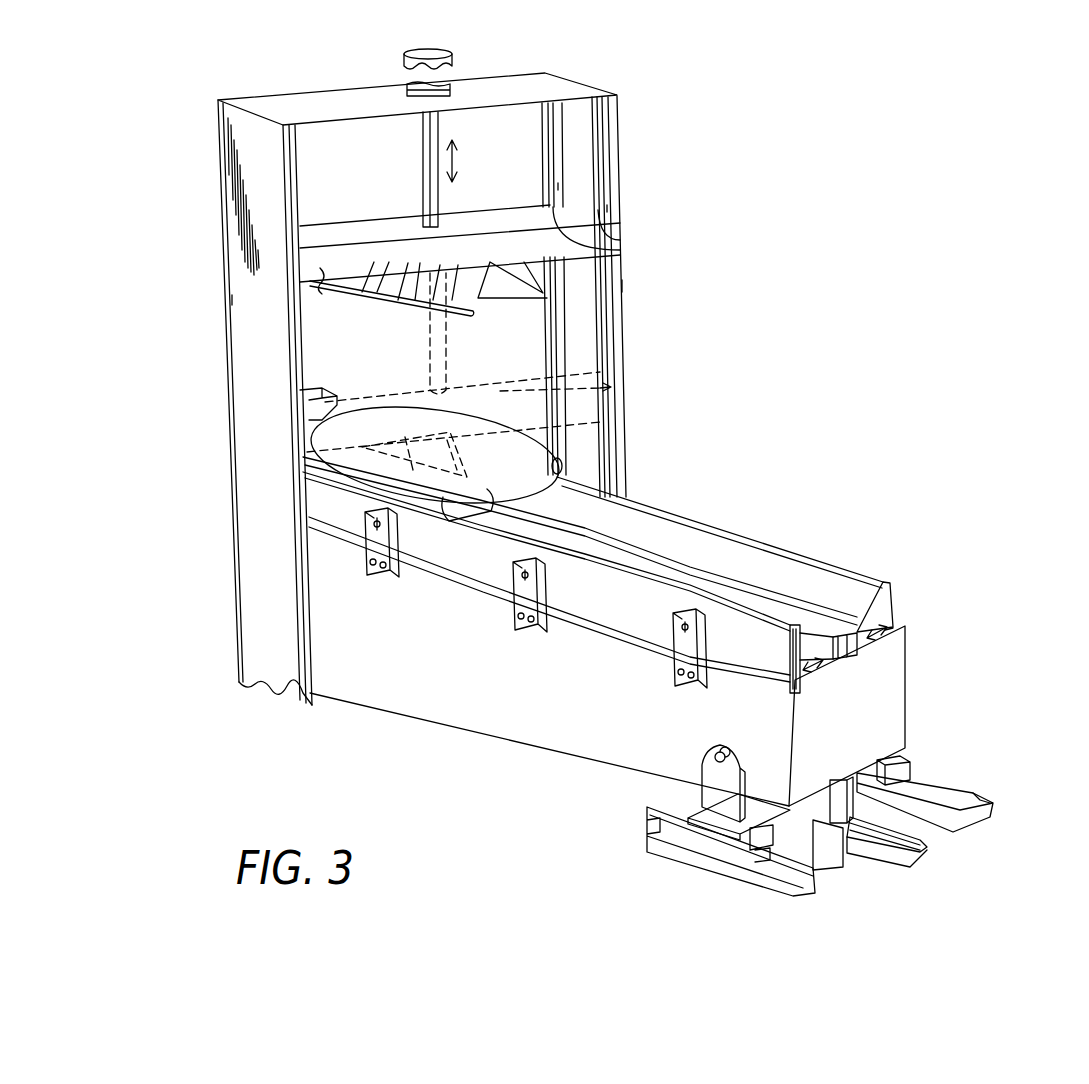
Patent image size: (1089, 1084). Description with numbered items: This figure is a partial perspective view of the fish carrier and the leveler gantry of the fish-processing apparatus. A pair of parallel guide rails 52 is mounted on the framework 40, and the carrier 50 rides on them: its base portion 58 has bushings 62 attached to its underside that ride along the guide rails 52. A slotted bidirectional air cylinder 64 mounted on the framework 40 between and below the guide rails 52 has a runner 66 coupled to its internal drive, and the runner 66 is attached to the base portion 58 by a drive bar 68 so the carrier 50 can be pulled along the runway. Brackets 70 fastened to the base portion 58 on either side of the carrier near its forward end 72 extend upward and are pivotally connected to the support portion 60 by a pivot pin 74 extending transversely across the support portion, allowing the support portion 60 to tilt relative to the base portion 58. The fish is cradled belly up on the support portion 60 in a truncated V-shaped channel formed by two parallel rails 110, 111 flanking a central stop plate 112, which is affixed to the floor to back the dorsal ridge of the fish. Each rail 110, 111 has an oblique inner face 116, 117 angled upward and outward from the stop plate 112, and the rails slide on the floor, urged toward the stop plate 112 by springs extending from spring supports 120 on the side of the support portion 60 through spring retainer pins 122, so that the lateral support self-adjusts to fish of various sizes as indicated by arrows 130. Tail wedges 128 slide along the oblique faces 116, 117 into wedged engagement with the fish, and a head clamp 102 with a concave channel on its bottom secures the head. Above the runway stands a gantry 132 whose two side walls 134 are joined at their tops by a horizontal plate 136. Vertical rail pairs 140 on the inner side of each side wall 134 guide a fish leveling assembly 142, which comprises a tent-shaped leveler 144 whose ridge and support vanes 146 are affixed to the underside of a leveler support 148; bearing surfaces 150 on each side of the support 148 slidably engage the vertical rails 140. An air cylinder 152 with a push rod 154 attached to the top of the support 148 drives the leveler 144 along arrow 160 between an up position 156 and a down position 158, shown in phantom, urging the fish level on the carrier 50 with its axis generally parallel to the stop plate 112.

The framework 40 is at (945, 788).
The carrier 50 is at (470, 710).
The guide rails 52 is at (910, 775).
The base portion 58 is at (680, 828).
The support portion 60 is at (893, 628).
The bushings 62 is at (785, 860).
The slotted bidirectional air cylinder 64 is at (905, 848).
The runner 66 is at (920, 845).
The drive bar 68 is at (948, 790).
The brackets 70 is at (700, 764).
The forward end 72 is at (907, 690).
The pivot pin 74 is at (732, 755).
The head clamp 102 is at (300, 398).
The rail 110 is at (862, 573).
The rail 111 is at (612, 618).
The stop plate 112 is at (858, 655).
The oblique inner face 116 is at (800, 562).
The oblique inner face 117 is at (840, 660).
The spring supports 120 is at (367, 547).
The spring retainer pins 122 is at (377, 522).
The tail wedges 128 is at (478, 520).
The arrows 130 is at (893, 645).
The gantry 132 is at (617, 163).
The side walls 134 is at (236, 350).
The horizontal plate 136 is at (274, 100).
The vertical rail pairs 140 is at (607, 207).
The fish leveling assembly 142 is at (360, 227).
The leveler 144 is at (425, 350).
The support vanes 146 is at (390, 300).
The leveler support 148 is at (322, 282).
The bearing surfaces 150 is at (623, 248).
The air cylinder 152 is at (455, 60).
The push rod 154 is at (423, 150).
The up position 156 is at (625, 285).
The down position 158 is at (623, 393).
The arrow 160 is at (462, 155).